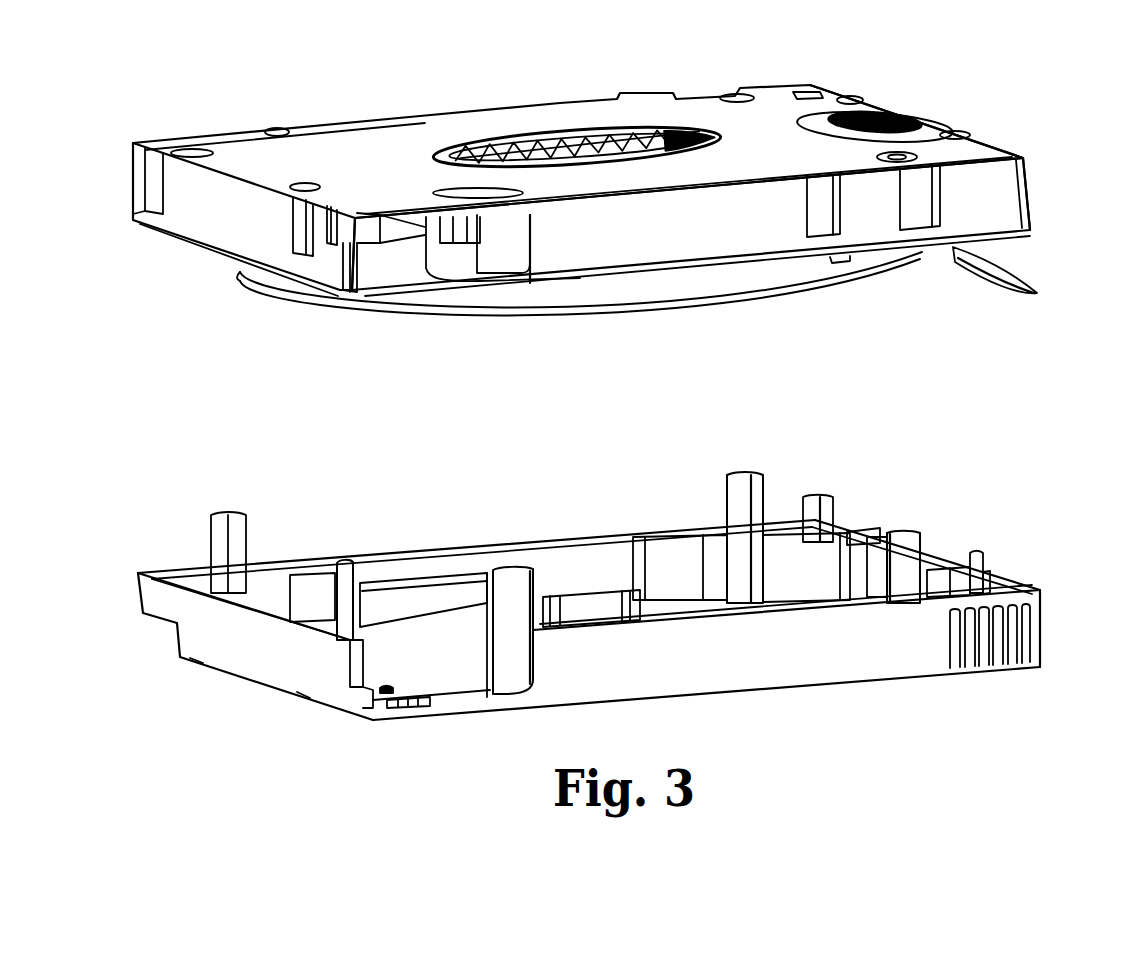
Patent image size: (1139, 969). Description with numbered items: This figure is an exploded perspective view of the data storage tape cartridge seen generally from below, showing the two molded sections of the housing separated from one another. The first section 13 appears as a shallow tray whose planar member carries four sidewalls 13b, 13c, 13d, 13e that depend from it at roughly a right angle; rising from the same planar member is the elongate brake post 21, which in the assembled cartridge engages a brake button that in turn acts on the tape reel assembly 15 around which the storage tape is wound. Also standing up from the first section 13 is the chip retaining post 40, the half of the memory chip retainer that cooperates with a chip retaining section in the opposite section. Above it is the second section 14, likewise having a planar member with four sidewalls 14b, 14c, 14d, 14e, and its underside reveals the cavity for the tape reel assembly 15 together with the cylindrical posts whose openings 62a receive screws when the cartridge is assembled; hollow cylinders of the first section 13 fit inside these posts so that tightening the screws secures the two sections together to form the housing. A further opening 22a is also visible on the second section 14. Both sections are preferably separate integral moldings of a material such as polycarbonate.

The first section 13 is at (1045, 620).
The sidewall 13b is at (272, 668).
The sidewall 13c is at (805, 655).
The sidewall 13d is at (940, 553).
The sidewall 13e is at (530, 545).
The second section 14 is at (1032, 193).
The sidewall 14b is at (215, 215).
The sidewall 14c is at (772, 233).
The sidewall 14d is at (997, 148).
The sidewall 14e is at (387, 117).
The tape reel assembly 15 is at (537, 160).
The brake post 21 is at (597, 600).
The screw hole 22a is at (277, 128).
The chip retaining post 40 is at (978, 560).
The opening 62a is at (897, 150).